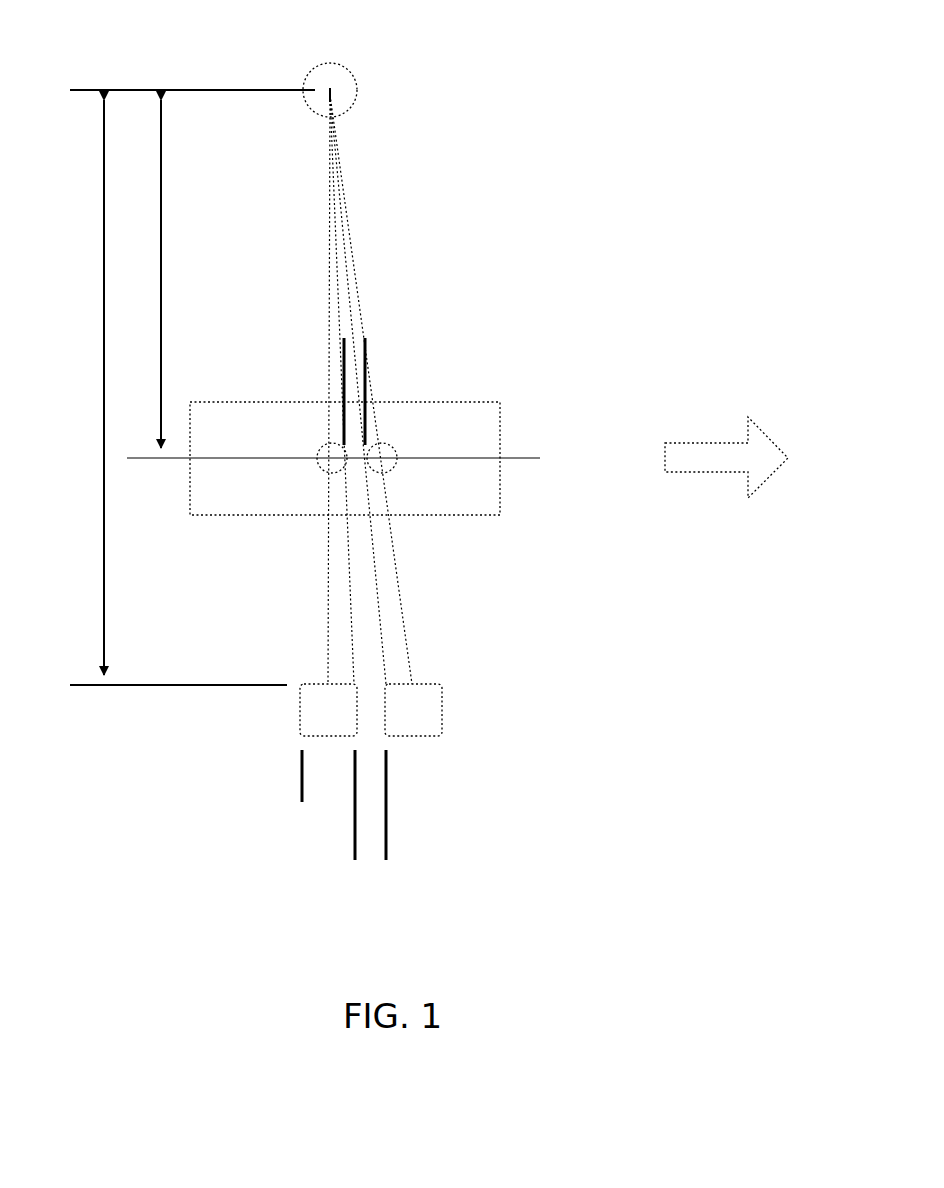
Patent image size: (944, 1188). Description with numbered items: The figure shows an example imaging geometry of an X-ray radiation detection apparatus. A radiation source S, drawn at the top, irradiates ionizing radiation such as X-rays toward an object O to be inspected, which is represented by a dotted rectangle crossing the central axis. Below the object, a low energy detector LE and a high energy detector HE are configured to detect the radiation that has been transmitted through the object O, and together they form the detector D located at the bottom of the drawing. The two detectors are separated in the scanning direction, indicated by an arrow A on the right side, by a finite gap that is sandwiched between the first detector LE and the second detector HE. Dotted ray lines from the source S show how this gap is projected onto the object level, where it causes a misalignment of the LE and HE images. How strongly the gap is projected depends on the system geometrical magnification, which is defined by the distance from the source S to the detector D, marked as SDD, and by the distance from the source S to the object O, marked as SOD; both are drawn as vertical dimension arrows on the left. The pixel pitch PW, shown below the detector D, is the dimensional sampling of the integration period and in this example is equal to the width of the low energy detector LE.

The radiation source S is at (430, 80).
The object O is at (525, 398).
The detector D is at (452, 697).
The arrow indicating scanning direction A is at (726, 457).
The low energy detector LE is at (328, 710).
The high energy detector HE is at (413, 710).
The source to detector distance SDD is at (84, 387).
The source to object distance SOD is at (141, 274).
The pixel pitch PW is at (382, 768).